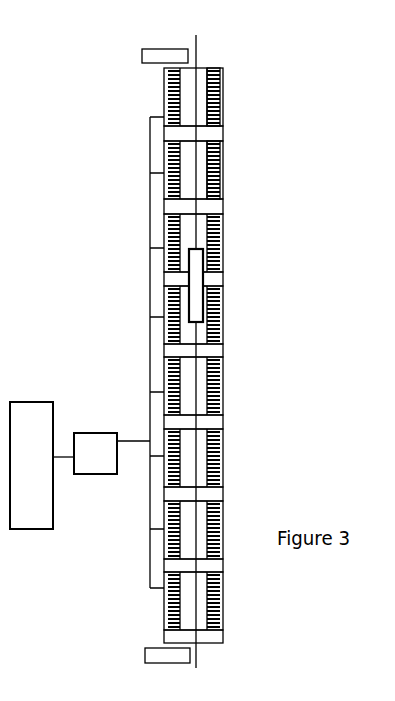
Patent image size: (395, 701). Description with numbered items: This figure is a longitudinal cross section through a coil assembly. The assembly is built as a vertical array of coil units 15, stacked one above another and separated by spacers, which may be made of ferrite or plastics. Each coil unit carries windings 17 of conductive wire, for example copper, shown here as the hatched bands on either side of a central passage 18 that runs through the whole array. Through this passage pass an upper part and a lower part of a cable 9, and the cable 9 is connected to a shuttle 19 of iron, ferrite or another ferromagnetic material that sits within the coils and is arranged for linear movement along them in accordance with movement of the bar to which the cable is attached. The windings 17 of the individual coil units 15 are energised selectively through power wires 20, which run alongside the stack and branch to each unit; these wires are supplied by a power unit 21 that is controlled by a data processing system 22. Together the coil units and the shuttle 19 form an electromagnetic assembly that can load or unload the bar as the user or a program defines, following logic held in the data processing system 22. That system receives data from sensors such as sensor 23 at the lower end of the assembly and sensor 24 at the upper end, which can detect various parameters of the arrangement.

The cable 9 is at (197, 46).
The coil unit 15 is at (205, 355).
The windings 17 is at (220, 97).
The passage 18 is at (204, 161).
The shuttle 19 is at (203, 274).
The power wires 20 is at (137, 336).
The controller 21 is at (95, 448).
The data processing system 22 is at (28, 520).
The sensor 23 is at (145, 649).
The sensor 24 is at (142, 50).